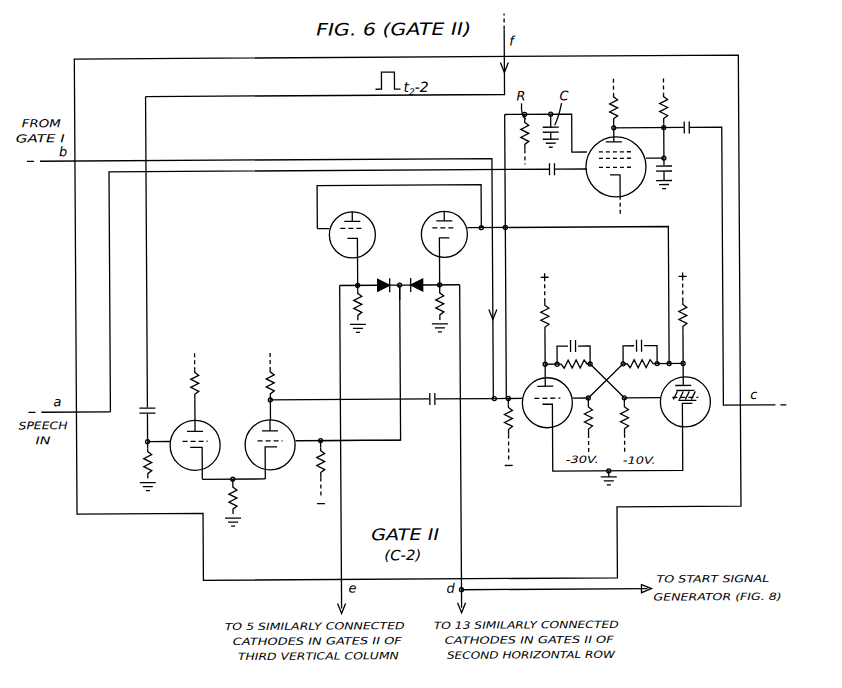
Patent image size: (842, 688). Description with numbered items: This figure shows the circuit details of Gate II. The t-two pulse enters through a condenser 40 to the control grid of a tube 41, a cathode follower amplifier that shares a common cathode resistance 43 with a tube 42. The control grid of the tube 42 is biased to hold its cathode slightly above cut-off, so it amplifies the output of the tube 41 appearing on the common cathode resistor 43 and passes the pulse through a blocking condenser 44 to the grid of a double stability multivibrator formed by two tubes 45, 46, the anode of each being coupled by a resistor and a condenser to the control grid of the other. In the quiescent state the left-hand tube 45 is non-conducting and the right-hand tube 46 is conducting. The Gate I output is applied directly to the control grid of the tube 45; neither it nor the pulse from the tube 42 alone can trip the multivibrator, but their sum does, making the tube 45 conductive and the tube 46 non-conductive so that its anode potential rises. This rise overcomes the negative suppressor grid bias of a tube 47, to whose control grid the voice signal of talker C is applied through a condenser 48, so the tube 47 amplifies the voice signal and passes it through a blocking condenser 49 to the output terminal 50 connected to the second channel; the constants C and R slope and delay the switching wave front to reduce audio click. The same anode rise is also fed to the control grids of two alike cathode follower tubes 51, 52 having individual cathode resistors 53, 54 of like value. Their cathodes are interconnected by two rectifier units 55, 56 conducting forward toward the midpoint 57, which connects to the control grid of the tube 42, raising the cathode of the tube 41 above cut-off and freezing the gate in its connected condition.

The condenser 40 is at (157, 405).
The cathode follower amplifier tube 41 is at (211, 432).
The amplifier tube 42 is at (288, 431).
The common cathode resistance 43 is at (237, 494).
The blocking condenser 44 is at (433, 392).
The left-hand multivibrator tube 45 is at (533, 427).
The right-hand multivibrator tube 46 is at (694, 428).
The gating tube 47 is at (611, 197).
The condenser 48 is at (552, 177).
The blocking condenser 49 is at (689, 122).
The output terminal 50 is at (727, 340).
The cathode follower tube 51 is at (463, 253).
The cathode follower tube 52 is at (331, 242).
The cathode resistor 53 is at (446, 305).
The cathode resistor 54 is at (352, 304).
The rectifier unit 55 is at (416, 279).
The rectifier unit 56 is at (386, 279).
The midpoint 57 is at (402, 289).